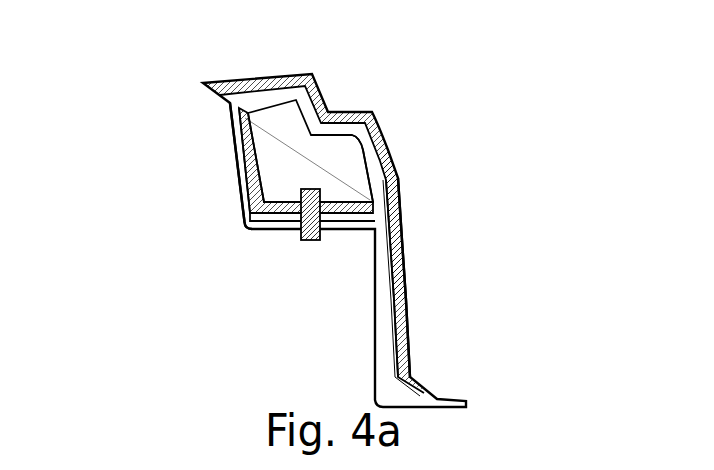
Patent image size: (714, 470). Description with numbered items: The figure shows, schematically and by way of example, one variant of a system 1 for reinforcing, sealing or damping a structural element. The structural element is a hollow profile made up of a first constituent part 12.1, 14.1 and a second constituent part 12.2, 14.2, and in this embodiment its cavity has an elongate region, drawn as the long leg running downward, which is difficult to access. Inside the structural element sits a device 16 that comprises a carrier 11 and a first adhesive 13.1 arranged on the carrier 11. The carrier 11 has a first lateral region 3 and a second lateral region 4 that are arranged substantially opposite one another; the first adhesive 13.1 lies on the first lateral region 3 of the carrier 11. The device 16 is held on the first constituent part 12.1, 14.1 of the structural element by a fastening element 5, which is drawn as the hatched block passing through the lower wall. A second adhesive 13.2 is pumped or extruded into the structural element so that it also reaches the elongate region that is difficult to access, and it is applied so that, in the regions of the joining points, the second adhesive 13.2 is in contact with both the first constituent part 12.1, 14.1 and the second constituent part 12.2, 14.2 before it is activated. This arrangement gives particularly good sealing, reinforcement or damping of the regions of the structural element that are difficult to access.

The system 1 is at (182, 74).
The first lateral region 3 is at (237, 190).
The second lateral region 4 is at (343, 135).
The fastening element 5 is at (310, 228).
The carrier 11 is at (345, 162).
The first constituent part 12.1 is at (237, 173).
The second constituent part 12.2 is at (403, 293).
The first adhesive 13.1 is at (278, 208).
The second adhesive 13.2 is at (390, 193).
The first constituent part 14.1 is at (307, 164).
The second constituent part 14.2 is at (392, 278).
The device 16 is at (292, 125).